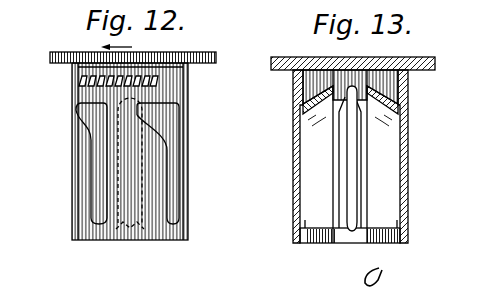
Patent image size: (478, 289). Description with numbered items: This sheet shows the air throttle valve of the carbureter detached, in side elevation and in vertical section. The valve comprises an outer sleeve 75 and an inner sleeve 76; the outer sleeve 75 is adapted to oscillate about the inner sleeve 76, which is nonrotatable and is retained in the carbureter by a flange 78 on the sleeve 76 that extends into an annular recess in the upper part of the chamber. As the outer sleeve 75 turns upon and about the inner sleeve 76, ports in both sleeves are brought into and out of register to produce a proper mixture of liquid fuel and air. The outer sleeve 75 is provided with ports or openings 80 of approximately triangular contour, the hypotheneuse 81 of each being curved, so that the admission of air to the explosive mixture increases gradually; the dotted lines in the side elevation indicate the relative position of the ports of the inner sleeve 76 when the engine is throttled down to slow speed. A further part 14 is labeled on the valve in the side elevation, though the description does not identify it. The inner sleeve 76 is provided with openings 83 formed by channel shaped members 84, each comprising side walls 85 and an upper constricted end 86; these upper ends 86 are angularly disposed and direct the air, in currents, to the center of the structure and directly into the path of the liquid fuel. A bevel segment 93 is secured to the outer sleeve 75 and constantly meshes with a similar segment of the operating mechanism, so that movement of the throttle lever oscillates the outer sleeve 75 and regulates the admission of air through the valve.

In FIG. 12, the spring fingers 14 is at (77, 108).
In FIG. 12, the outer sleeve 75 is at (78, 192).
In FIG. 13, the outer sleeve 75 is at (407, 237).
In FIG. 13, the inner sleeve 76 is at (396, 69).
In FIG. 12, the flange 78 is at (205, 63).
In FIG. 13, the flange 78 is at (285, 58).
In FIG. 12, the ports or openings 80 is at (90, 146).
In FIG. 12, the hypotheneuse 81 is at (98, 139).
In FIG. 12, the openings 83 is at (115, 232).
In FIG. 13, the openings 83 is at (301, 112).
In FIG. 13, the channel shaped members 84 is at (322, 158).
In FIG. 13, the side walls 85 is at (303, 206).
In FIG. 13, the upper constricted ends 86 is at (337, 88).
In FIG. 12, the bevel segment 93 is at (80, 78).